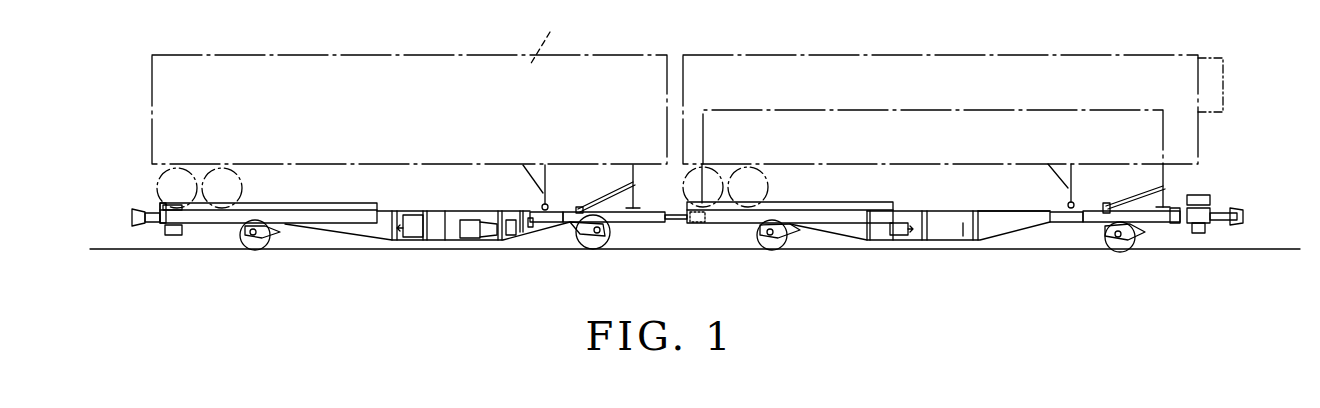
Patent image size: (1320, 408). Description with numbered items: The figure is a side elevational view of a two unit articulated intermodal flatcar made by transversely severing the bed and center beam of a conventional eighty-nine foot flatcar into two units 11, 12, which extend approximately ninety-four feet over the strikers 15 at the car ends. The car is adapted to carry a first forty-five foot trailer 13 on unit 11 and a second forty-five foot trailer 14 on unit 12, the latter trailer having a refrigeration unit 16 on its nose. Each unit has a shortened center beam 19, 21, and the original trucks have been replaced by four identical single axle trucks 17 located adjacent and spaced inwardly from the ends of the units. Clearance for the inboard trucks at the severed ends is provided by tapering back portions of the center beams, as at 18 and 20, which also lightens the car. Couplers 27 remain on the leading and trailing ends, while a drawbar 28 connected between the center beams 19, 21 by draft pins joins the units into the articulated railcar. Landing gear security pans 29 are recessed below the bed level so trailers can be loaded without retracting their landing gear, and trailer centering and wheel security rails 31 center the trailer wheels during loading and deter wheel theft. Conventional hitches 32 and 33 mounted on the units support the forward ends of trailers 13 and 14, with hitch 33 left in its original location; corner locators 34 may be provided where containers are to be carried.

The first unit 11 is at (373, 55).
The second unit 12 is at (1047, 55).
The first 45 foot trailer 13 is at (550, 34).
The second 45 foot trailer 14 is at (933, 60).
The strikers 15 is at (153, 225).
The refrigeration unit 16 is at (1225, 88).
The single axle trucks 17 is at (267, 255).
The tapered relief portion of center beam 18 is at (848, 232).
The shortened center beam 19 is at (990, 234).
The tapered relief portion of center beam 20 is at (523, 232).
The shortened center beam 21 is at (380, 228).
The couplers 27 is at (150, 217).
The drawbar 28 is at (680, 222).
The landing gear security pans 29 is at (532, 212).
The trailer centering and wheel security rails 31 is at (335, 204).
The hitch 32 is at (637, 196).
The hitch 33 is at (1165, 190).
The corner locators 34 is at (1178, 225).